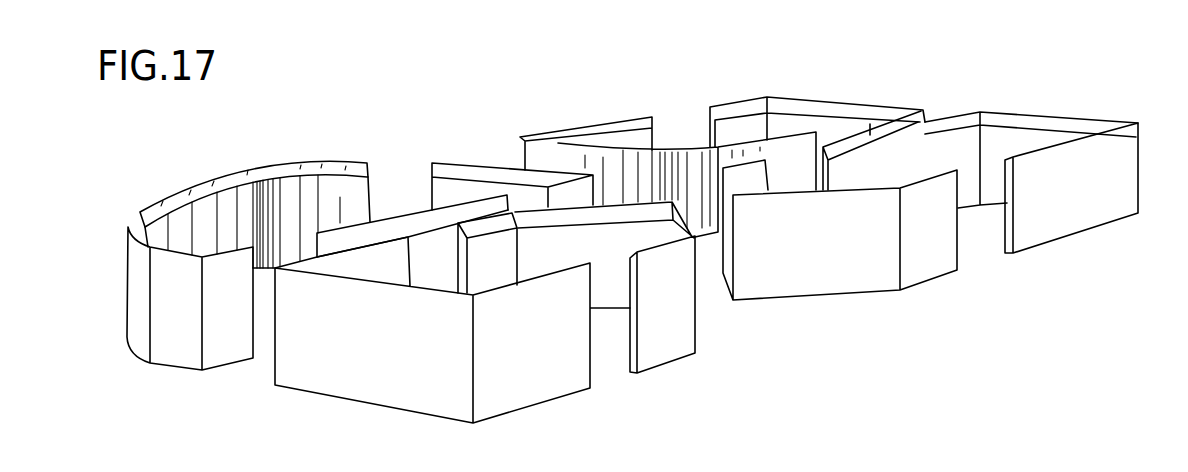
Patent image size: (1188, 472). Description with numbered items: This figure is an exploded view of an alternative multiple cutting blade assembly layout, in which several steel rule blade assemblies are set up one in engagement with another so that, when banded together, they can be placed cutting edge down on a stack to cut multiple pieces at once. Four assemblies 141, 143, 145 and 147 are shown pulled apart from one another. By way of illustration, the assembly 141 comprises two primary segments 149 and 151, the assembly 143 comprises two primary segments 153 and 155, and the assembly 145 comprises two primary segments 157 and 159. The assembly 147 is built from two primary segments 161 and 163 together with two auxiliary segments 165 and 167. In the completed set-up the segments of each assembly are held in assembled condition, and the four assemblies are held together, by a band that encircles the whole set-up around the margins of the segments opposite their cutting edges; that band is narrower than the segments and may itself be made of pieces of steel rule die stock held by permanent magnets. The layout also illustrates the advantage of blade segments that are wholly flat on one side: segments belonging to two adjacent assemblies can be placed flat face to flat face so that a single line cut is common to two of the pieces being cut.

The assembly 141 is at (514, 315).
The assembly 143 is at (948, 229).
The assembly 145 is at (681, 151).
The assembly 147 is at (248, 264).
The primary segment 149 is at (427, 413).
The primary segment 151 is at (673, 362).
The primary segment 153 is at (1113, 220).
The primary segment 155 is at (845, 288).
The primary segment 157 is at (877, 103).
The primary segment 159 is at (580, 122).
The primary segment 161 is at (475, 162).
The primary segment 163 is at (187, 362).
The auxiliary segment 165 is at (225, 180).
The auxiliary segment 167 is at (420, 223).